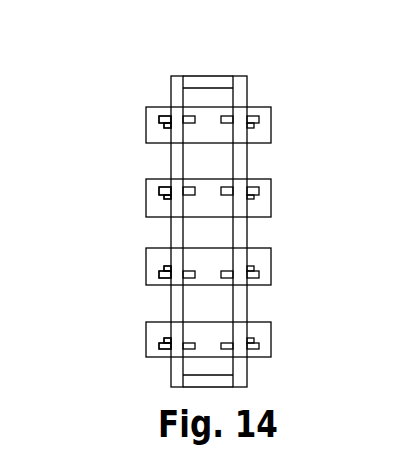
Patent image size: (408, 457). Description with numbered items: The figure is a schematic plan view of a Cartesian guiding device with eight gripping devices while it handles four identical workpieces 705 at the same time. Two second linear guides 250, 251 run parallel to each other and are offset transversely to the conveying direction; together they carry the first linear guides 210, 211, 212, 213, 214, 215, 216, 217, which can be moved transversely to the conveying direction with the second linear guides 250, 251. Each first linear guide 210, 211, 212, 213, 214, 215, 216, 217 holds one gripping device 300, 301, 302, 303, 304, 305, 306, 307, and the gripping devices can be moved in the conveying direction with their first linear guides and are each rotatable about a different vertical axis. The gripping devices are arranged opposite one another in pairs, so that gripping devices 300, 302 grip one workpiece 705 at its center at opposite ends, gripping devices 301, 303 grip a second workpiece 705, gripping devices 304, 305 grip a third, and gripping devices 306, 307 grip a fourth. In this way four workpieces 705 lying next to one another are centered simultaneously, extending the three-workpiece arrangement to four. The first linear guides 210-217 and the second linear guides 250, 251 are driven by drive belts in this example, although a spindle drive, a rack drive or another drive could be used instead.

The second linear guide 250 is at (180, 77).
The second linear guide 251 is at (236, 77).
The workpiece 705 is at (158, 116).
The first linear guide 210 is at (159, 347).
The first linear guide 211 is at (159, 275).
The first linear guide 212 is at (258, 347).
The first linear guide 213 is at (258, 277).
The first linear guide 214 is at (159, 190).
The first linear guide 215 is at (258, 190).
The first linear guide 216 is at (158, 119).
The first linear guide 217 is at (258, 119).
The gripping device 300 is at (159, 344).
The gripping device 301 is at (159, 272).
The gripping device 302 is at (255, 339).
The gripping device 303 is at (255, 268).
The gripping device 304 is at (160, 197).
The gripping device 305 is at (255, 198).
The gripping device 306 is at (160, 125).
The gripping device 307 is at (255, 127).